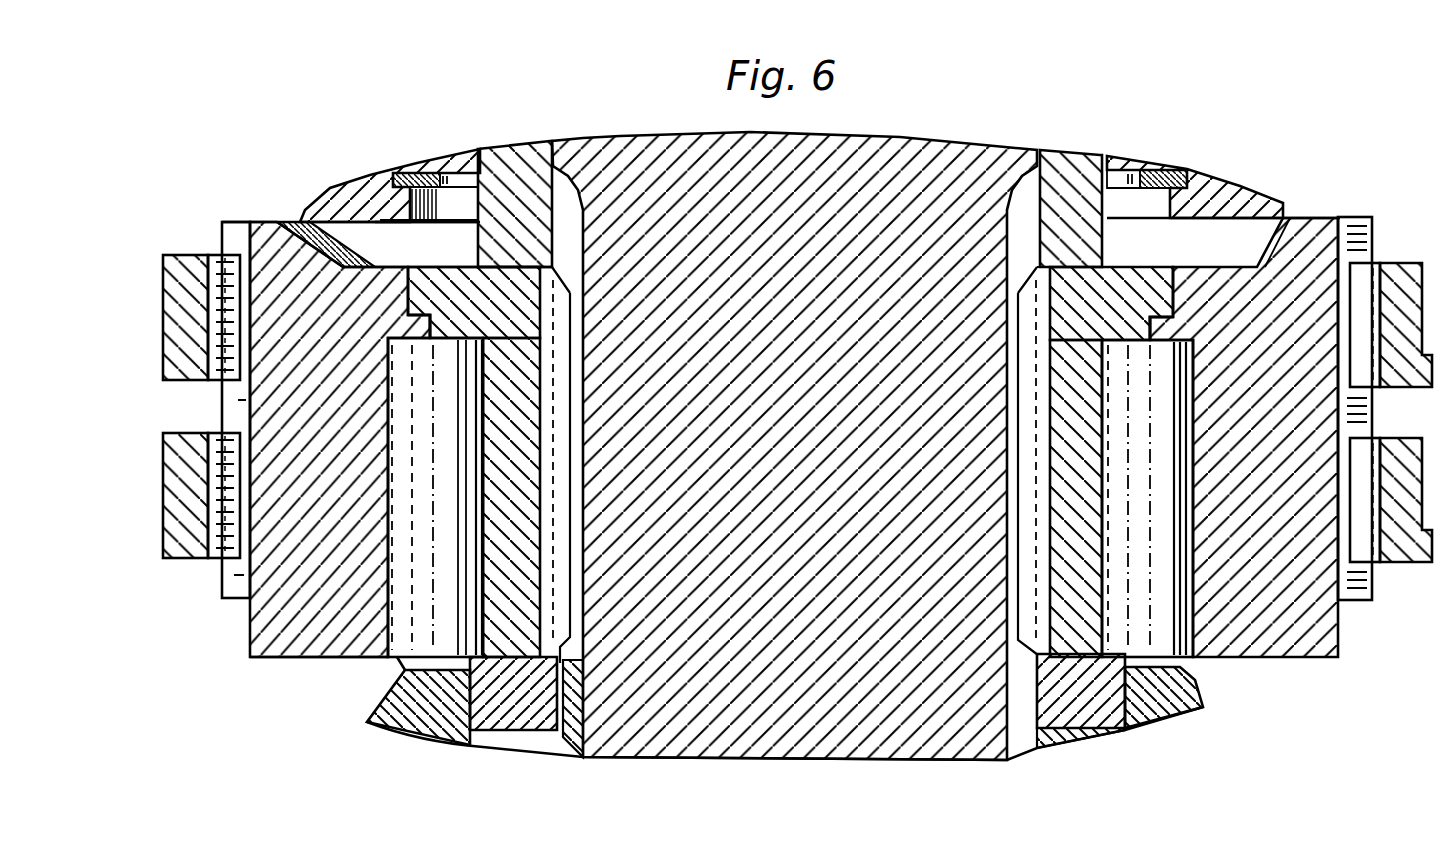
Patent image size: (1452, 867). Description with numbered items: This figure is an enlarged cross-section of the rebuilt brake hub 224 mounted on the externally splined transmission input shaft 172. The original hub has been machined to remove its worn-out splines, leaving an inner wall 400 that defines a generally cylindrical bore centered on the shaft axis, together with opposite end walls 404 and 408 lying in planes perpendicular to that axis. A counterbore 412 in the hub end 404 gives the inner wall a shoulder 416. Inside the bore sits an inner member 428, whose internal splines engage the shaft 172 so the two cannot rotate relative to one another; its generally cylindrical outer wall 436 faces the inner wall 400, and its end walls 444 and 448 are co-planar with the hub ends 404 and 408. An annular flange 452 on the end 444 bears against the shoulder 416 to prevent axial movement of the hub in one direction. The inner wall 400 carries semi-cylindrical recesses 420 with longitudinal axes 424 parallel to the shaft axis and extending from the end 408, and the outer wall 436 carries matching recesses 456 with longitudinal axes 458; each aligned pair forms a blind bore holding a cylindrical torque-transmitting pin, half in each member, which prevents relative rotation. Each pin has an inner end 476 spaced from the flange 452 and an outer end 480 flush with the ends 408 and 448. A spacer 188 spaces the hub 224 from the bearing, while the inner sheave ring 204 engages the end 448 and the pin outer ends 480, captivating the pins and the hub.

The transmission input shaft 172 is at (776, 727).
The spacer 188 is at (508, 150).
The inner sheave ring 204 is at (533, 688).
The brake hub 224 is at (277, 647).
The inner wall 400 is at (440, 328).
The hub end 404 is at (350, 243).
The hub end 408 is at (327, 668).
The counterbore 412 is at (1152, 278).
The shoulder 416 is at (1162, 300).
The recesses 420 is at (407, 474).
The longitudinal axes 424 is at (407, 410).
The inner member 428 is at (520, 462).
The outer wall 436 is at (433, 560).
The end wall of inner member 444 is at (450, 258).
The end wall of inner member 448 is at (1055, 672).
The annular flange 452 is at (407, 288).
The recesses 456 is at (473, 545).
The longitudinal axes 458 is at (457, 627).
The inner end of pin 476 is at (405, 332).
The outer end of pin 480 is at (397, 657).